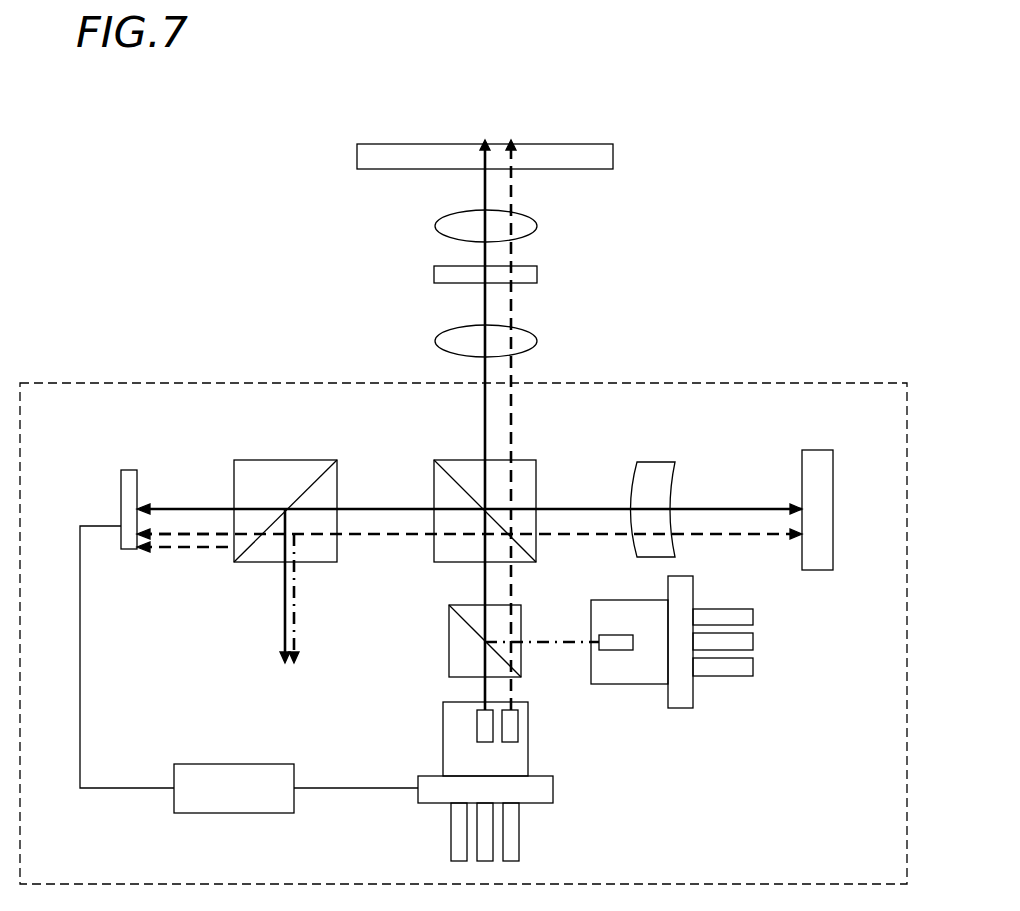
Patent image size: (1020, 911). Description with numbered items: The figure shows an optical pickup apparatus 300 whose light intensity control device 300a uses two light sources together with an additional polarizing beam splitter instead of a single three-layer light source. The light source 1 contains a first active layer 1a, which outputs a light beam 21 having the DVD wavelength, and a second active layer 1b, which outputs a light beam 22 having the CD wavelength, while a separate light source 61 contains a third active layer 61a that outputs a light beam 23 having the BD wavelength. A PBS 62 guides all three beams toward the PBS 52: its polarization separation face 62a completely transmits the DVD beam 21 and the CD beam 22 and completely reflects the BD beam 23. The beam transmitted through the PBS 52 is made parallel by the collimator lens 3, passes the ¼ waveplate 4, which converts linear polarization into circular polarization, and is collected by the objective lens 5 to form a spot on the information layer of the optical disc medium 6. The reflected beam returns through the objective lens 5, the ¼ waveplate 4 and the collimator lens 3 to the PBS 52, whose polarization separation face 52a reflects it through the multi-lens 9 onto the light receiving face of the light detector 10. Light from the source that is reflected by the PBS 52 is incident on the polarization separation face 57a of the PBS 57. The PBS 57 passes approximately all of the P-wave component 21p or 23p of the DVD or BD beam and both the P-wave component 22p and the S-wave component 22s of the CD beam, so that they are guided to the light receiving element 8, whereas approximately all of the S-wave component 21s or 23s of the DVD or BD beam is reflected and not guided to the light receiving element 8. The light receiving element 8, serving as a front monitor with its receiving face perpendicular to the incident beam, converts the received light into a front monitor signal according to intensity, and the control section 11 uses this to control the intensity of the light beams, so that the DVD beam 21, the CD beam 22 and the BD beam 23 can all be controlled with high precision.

The optical pickup apparatus 300 is at (755, 113).
The light intensity control device 300a is at (762, 382).
The optical disc medium 6 is at (613, 154).
The objective lens 5 is at (434, 226).
The ¼ waveplate 4 is at (434, 275).
The collimator lens 3 is at (537, 341).
The light receiving element 8 is at (121, 510).
The PBS 57 is at (273, 460).
The polarization separation face 57a is at (322, 467).
The PBS 52 is at (433, 550).
The polarization separation face 52a is at (453, 480).
The multi-lens 9 is at (652, 462).
The light detector 10 is at (820, 450).
The PBS 62 is at (448, 640).
The polarization separation face 62a is at (463, 620).
The light source 61 is at (680, 708).
The third active layer 61a is at (615, 650).
The light beam 23 is at (551, 641).
The light source 1 is at (443, 738).
The first active layer 1a is at (475, 727).
The second active layer 1b is at (522, 725).
The control section 11 is at (243, 764).
The light beam 21 is at (485, 687).
The light beam 22 is at (510, 683).
The P-wave component 21p is at (215, 508).
The P-wave component 23p is at (157, 508).
The P-wave component 22p is at (180, 548).
The S-wave component 22s is at (217, 547).
The S-wave component 21s is at (285, 608).
The S-wave component 23s is at (297, 597).